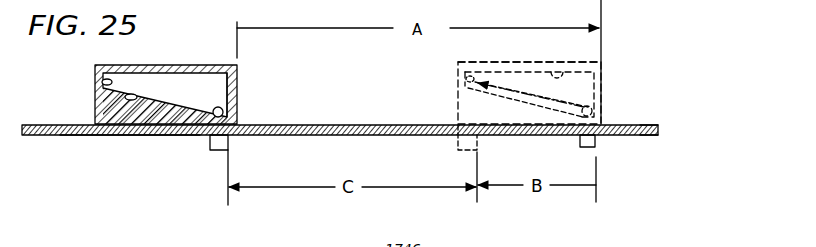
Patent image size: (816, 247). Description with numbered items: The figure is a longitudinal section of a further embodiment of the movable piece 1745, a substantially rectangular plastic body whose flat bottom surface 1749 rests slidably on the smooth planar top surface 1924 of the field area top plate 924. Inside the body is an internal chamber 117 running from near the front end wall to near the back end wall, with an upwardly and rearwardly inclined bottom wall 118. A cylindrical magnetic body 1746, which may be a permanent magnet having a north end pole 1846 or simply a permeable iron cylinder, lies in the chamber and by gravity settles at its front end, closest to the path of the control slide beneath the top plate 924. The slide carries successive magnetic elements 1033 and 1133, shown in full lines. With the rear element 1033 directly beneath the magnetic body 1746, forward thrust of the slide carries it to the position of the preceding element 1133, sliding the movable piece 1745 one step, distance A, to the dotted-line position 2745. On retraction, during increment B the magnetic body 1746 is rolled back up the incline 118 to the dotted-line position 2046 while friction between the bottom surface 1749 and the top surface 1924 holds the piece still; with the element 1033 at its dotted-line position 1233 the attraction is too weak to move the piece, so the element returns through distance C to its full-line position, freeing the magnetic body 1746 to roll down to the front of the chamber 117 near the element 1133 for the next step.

The movable piece 1745 is at (123, 62).
The internal chamber 117 is at (104, 82).
The inclined bottom wall 118 is at (125, 98).
The magnetic body 1746 is at (217, 106).
The north end pole 1846 is at (236, 108).
The top surface 1924 is at (312, 124).
The bottom surface 1749 is at (135, 135).
The magnetic element 1033 is at (207, 153).
The dotted line position 2046 is at (466, 62).
The dotted line position 2745 is at (605, 77).
The dotted line position 1233 is at (456, 150).
The magnetic element 1133 is at (596, 147).
The top plate 924 is at (648, 122).